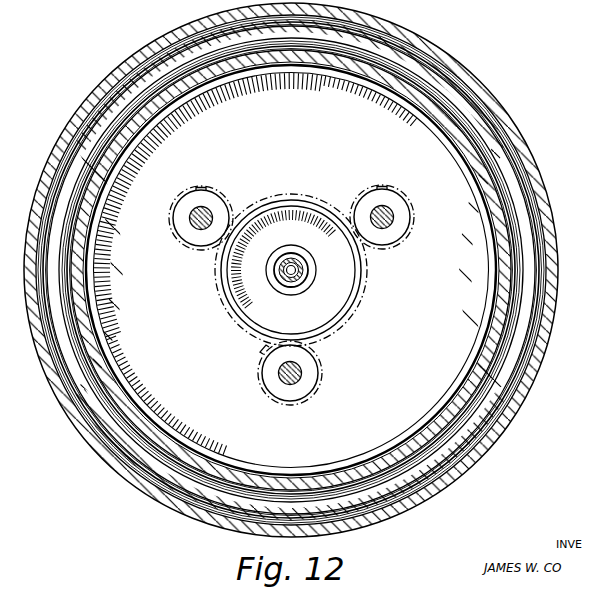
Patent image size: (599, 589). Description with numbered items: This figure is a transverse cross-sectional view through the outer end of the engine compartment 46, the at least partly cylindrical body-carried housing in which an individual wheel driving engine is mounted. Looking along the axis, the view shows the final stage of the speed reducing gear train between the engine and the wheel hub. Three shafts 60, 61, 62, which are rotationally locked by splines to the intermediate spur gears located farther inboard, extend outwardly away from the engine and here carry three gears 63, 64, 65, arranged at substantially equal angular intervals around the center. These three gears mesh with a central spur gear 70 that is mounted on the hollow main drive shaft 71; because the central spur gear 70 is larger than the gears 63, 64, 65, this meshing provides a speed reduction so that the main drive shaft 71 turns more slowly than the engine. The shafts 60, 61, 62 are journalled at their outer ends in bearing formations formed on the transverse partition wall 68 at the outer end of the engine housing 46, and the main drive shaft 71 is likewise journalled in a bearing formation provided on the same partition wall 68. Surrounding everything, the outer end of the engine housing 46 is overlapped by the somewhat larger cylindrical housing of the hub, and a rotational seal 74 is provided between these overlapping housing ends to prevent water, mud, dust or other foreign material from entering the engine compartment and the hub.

The rotational seal 74 is at (478, 80).
The engine compartment 46 is at (425, 115).
The transverse partition wall 68 is at (440, 140).
The central spur gear 70 is at (291, 194).
The main drive shaft 71 is at (288, 282).
The shaft 60 is at (300, 380).
The shaft 61 is at (190, 228).
The shaft 62 is at (388, 229).
The gear 63 is at (263, 360).
The gear 64 is at (205, 190).
The gear 65 is at (408, 205).